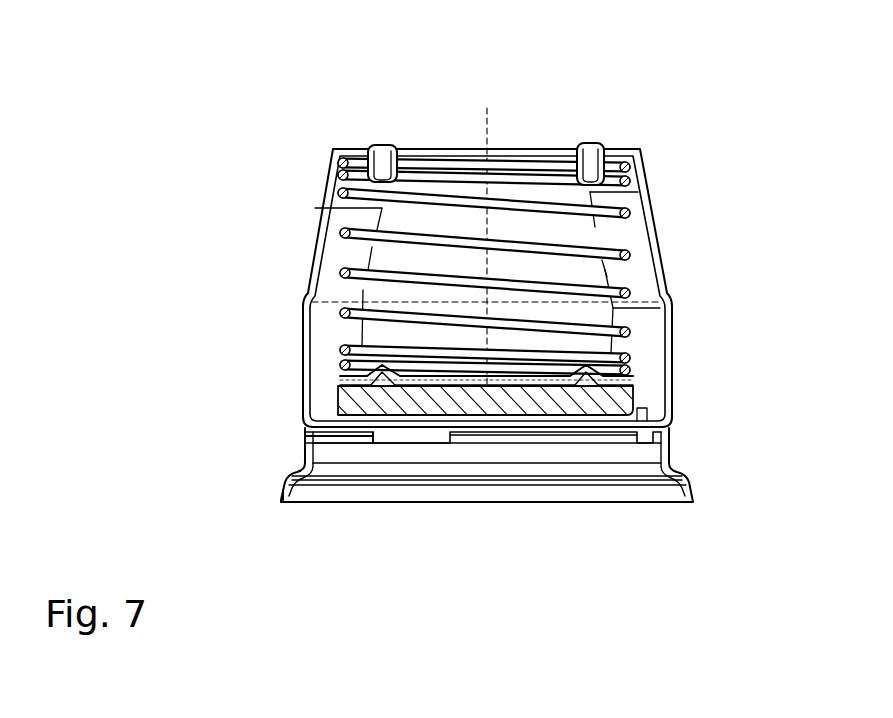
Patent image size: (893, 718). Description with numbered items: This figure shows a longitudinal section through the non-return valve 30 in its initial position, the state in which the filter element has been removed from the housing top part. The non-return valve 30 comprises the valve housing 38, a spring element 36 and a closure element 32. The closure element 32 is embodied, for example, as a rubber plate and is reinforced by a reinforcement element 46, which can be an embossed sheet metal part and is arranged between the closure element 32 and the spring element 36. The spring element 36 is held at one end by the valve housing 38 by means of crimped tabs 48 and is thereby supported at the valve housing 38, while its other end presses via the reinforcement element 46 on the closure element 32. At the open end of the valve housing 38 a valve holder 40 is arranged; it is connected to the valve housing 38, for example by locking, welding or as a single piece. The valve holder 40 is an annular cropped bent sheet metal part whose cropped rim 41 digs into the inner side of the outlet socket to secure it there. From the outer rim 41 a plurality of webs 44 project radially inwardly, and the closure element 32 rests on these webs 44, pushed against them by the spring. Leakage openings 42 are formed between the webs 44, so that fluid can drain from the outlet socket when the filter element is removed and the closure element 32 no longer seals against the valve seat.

The non-return valve 30 is at (488, 285).
The closure element 32 is at (671, 394).
The spring element 36 is at (340, 273).
The valve housing 38 is at (662, 276).
The valve holder 40 is at (689, 483).
The cropped rim 41 is at (282, 490).
The leakage openings 42 is at (427, 433).
The webs 44 is at (345, 437).
The reinforcement element 46 is at (337, 382).
The crimped tabs 48 is at (591, 144).